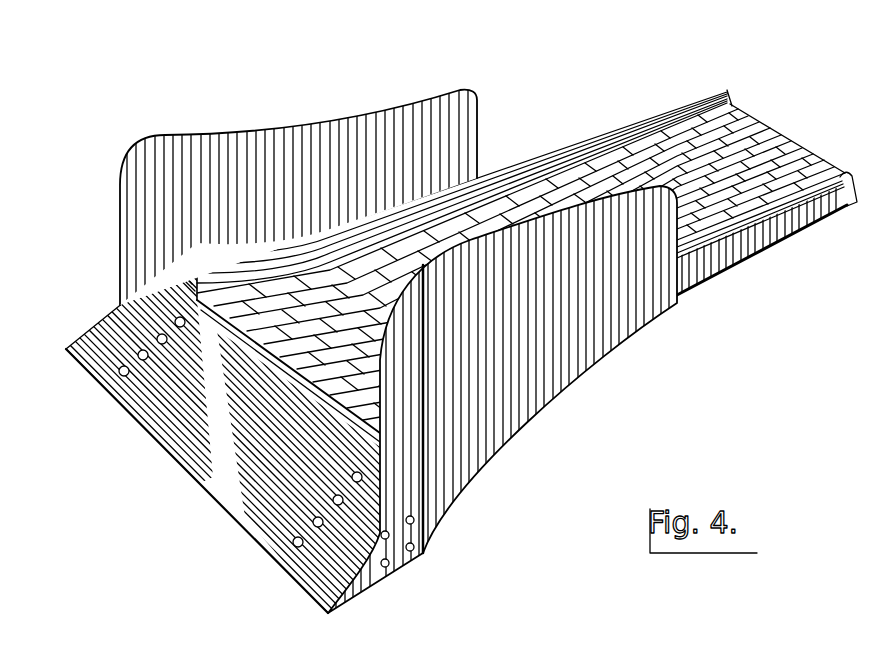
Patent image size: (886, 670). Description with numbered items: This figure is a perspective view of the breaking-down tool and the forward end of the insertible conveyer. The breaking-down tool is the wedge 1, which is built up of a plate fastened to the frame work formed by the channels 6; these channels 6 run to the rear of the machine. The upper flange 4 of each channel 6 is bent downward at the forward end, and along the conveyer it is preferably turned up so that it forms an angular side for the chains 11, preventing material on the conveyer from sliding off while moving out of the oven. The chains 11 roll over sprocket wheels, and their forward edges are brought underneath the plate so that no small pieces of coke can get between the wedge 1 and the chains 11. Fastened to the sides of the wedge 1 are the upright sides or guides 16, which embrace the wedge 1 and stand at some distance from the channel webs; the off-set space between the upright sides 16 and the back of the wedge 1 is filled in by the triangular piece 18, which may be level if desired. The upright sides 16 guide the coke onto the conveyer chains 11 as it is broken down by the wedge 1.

The wedge 1 is at (227, 478).
The upper flange 4 is at (533, 157).
The channels 6 is at (807, 218).
The chain 11 is at (762, 138).
The upright sides or guides 16 is at (360, 135).
The triangular piece 18 is at (198, 263).